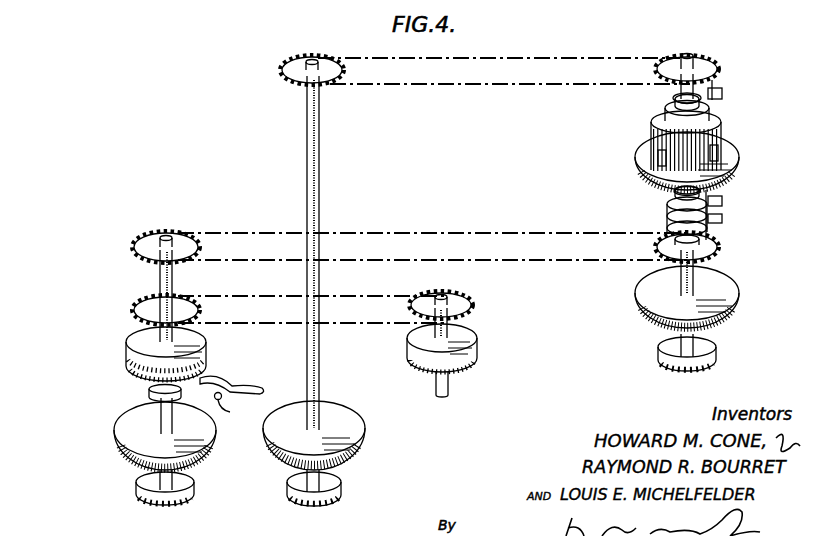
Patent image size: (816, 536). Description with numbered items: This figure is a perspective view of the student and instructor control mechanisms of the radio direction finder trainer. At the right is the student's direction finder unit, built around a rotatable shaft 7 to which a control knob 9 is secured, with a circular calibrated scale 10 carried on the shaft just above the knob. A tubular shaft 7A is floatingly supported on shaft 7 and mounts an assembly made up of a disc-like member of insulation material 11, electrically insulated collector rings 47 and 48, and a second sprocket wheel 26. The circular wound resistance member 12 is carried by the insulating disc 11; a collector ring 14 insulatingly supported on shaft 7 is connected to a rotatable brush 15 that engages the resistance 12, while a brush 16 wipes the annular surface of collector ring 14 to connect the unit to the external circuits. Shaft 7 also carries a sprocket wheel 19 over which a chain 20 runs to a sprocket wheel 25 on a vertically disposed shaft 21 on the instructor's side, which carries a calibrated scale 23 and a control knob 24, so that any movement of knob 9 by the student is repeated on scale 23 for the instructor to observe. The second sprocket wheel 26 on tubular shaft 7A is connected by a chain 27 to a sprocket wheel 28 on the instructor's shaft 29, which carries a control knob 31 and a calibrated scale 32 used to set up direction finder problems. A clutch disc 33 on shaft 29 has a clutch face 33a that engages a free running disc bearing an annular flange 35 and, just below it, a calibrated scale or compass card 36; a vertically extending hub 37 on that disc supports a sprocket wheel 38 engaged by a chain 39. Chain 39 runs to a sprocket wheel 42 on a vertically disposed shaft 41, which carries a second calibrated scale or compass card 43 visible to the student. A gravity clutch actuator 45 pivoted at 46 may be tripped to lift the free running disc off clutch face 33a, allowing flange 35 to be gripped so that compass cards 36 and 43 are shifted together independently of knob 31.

The rotatable shaft 7 is at (680, 90).
The tubular shaft 7A is at (702, 100).
The control knob 9 is at (664, 362).
The circular calibrated scale 10 is at (735, 312).
The disc-like member of insulation material 11 is at (730, 152).
The circular wound resistance member 12 is at (654, 130).
The collector ring 14 is at (673, 100).
The rotatable brush 15 is at (667, 118).
The brush 16 is at (722, 100).
The sprocket wheel 19 is at (704, 62).
The chain 20 is at (570, 57).
The vertically disposed shaft 21 is at (322, 176).
The calibrated scale 23 is at (358, 440).
The control knob 24 is at (338, 494).
The sprocket wheel 25 is at (282, 68).
The second sprocket wheel 26 is at (705, 246).
The chain 27 is at (570, 234).
The sprocket wheel 28 is at (142, 240).
The shaft 29 is at (158, 278).
The control knob 31 is at (146, 486).
The calibrated scale 32 is at (128, 436).
The clutch disc 33 is at (155, 400).
The clutch face 33a is at (148, 390).
The annular flange 35 is at (138, 352).
The calibrated scale or compass card 36 is at (132, 373).
The vertically extending hub 37 is at (156, 334).
The sprocket wheel 38 is at (134, 306).
The chain 39 is at (404, 295).
The vertically disposed shaft 41 is at (450, 332).
The sprocket wheel 42 is at (462, 302).
The calibrated scale or compass card 43 is at (478, 360).
The clutch actuator 45 is at (256, 390).
The pivot 46 is at (232, 412).
The collector ring 47 is at (702, 192).
The collector ring 48 is at (722, 218).